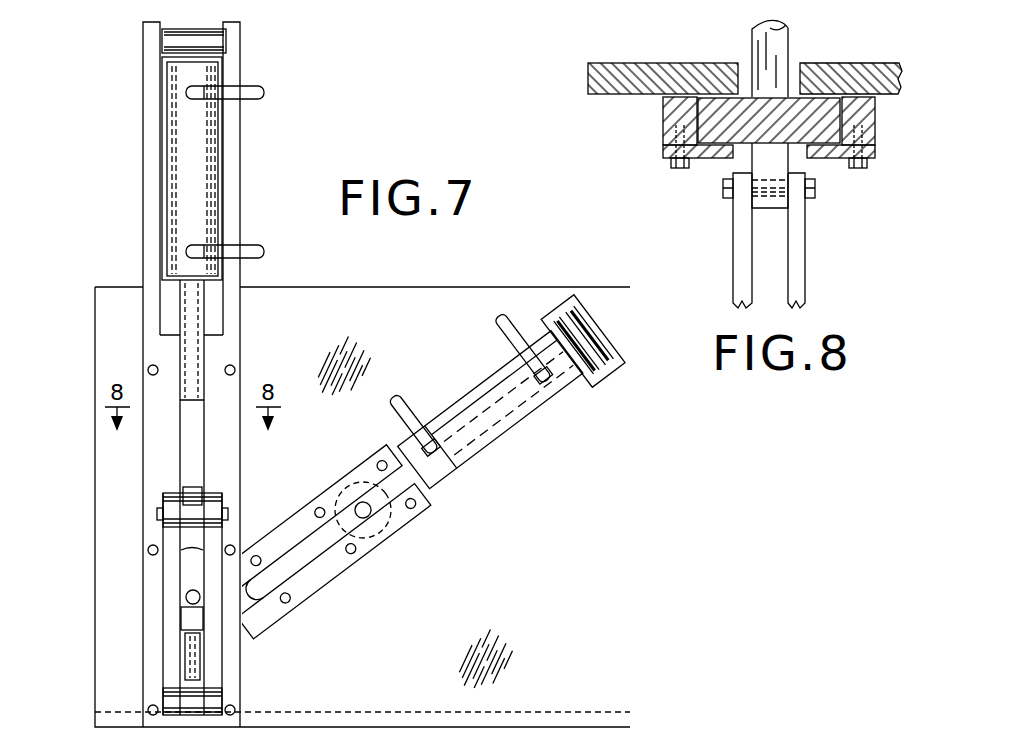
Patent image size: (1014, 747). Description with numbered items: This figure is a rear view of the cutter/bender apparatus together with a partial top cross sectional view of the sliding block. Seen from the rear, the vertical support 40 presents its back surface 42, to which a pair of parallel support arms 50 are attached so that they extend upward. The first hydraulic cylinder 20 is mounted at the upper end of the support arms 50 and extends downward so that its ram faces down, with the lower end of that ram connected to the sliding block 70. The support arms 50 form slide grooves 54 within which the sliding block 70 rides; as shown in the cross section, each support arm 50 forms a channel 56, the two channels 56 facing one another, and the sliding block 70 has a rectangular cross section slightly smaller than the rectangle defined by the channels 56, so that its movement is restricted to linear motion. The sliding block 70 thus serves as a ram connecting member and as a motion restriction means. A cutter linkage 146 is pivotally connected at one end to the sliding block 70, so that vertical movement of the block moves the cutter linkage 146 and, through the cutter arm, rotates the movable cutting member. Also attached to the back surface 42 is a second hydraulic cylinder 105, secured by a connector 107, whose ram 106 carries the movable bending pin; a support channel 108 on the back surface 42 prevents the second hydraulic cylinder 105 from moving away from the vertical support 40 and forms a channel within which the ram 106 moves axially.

In FIG. 7, the first hydraulic cylinder 20 is at (195, 207).
In FIG. 7, the vertical support 40 is at (477, 297).
In FIG. 8, the vertical support 40 is at (613, 95).
In FIG. 7, the back surface 42 is at (548, 573).
In FIG. 7, the support arms 50 is at (150, 163).
In FIG. 8, the slide grooves 54 is at (818, 160).
In FIG. 7, the channel 56 is at (155, 418).
In FIG. 8, the channel 56 is at (665, 133).
In FIG. 8, the sliding block 70 is at (722, 118).
In FIG. 7, the second hydraulic cylinder 105 is at (483, 423).
In FIG. 7, the ram 106 is at (395, 487).
In FIG. 7, the connector 107 is at (607, 376).
In FIG. 7, the support channel 108 is at (315, 585).
In FIG. 7, the cutter linkage 146 is at (170, 600).
In FIG. 8, the cutter linkage 146 is at (740, 245).